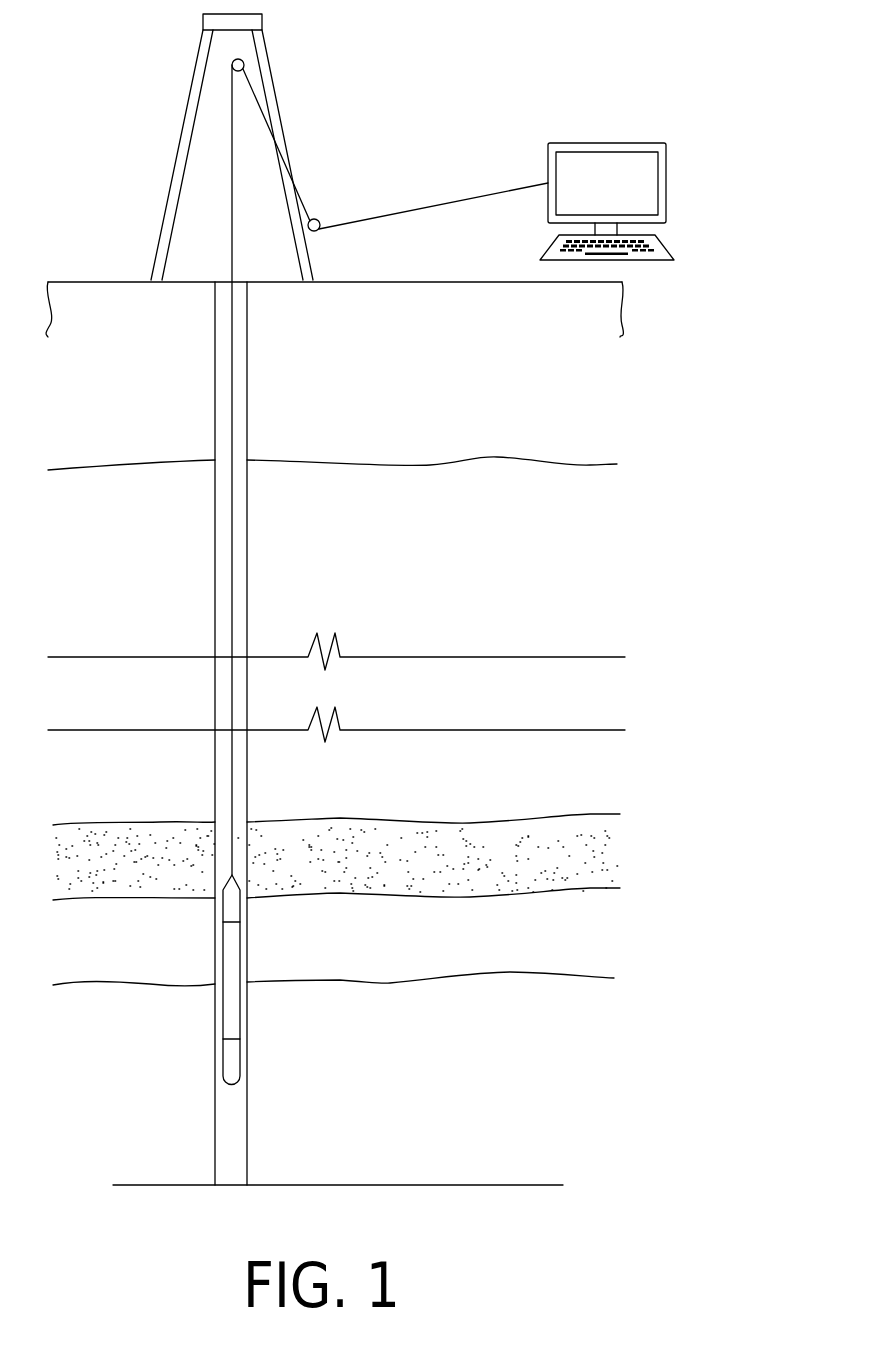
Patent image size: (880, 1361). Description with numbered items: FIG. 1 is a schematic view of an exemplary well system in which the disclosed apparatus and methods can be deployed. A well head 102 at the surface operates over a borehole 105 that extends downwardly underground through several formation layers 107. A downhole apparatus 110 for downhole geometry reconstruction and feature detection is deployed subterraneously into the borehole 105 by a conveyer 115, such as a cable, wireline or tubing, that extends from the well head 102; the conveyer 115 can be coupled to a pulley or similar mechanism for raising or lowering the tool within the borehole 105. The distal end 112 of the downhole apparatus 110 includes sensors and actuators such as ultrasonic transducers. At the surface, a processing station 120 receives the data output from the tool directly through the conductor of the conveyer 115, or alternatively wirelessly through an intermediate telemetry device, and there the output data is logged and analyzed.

The well head 102 is at (272, 65).
The borehole 105 is at (214, 365).
The subterranean formation 107 is at (262, 389).
The downhole apparatus 110 is at (232, 1022).
The distal end 112 is at (242, 1062).
The conveyer 115 is at (230, 199).
The processing station 120 is at (582, 143).